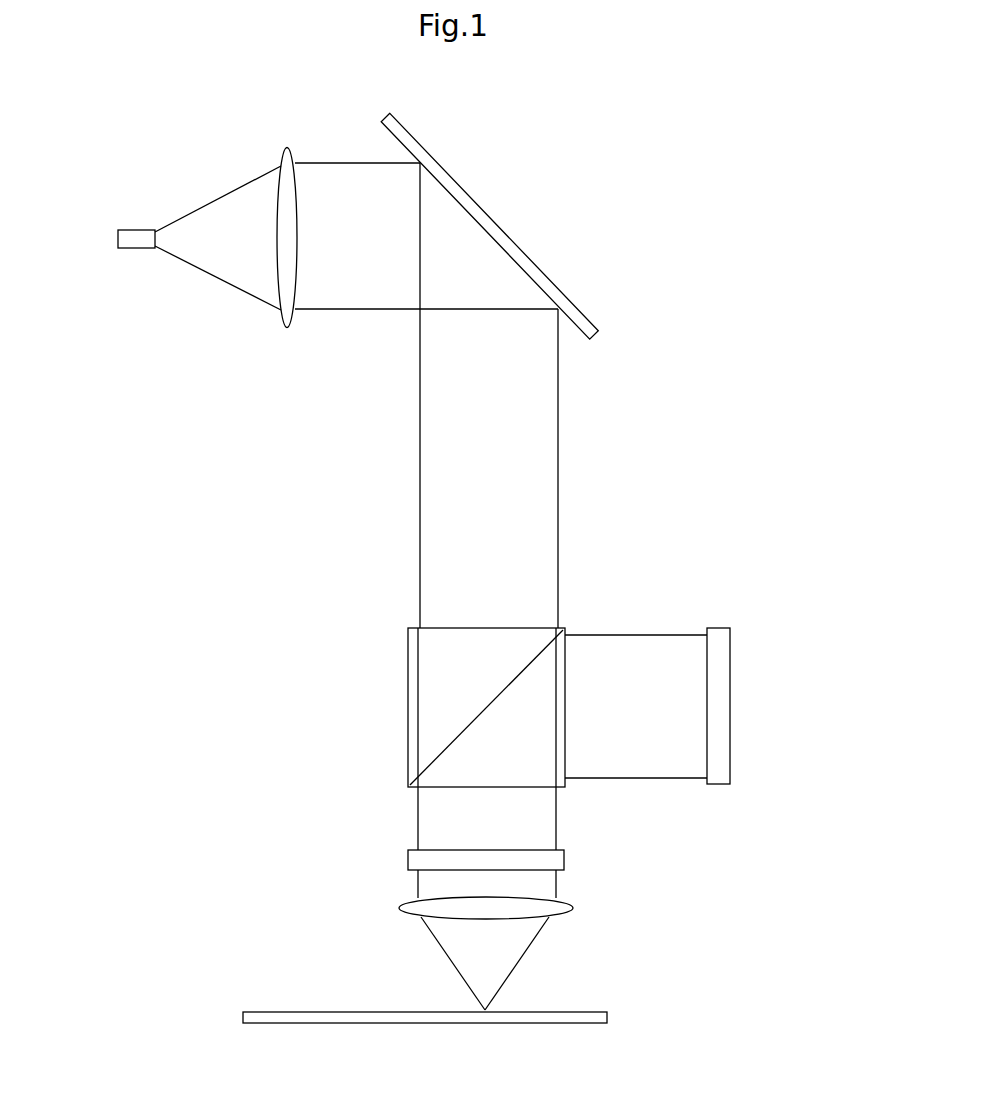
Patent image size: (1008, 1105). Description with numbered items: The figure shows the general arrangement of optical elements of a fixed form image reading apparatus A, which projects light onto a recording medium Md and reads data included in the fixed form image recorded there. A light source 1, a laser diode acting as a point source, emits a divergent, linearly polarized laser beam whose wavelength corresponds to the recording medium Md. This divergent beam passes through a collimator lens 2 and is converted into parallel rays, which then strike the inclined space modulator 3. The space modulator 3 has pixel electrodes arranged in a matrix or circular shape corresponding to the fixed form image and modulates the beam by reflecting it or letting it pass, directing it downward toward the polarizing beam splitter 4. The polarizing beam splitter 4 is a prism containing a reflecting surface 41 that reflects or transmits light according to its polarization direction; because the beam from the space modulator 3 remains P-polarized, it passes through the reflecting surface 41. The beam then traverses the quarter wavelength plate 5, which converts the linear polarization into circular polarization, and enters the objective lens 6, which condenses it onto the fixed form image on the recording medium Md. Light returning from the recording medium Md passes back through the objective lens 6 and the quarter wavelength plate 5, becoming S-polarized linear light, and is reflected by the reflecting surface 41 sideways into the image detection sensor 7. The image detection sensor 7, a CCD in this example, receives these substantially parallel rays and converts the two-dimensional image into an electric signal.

The fixed form image reading apparatus A is at (613, 173).
The light source 1 is at (130, 237).
The collimator lens 2 is at (282, 165).
The space modulator 3 is at (450, 183).
The polarizing beam splitter 4 is at (410, 673).
The reflecting surface 41 is at (440, 758).
The quarter wavelength plate 5 is at (408, 862).
The objective lens 6 is at (400, 907).
The image detection sensor 7 is at (716, 773).
The recording medium Md is at (267, 1017).